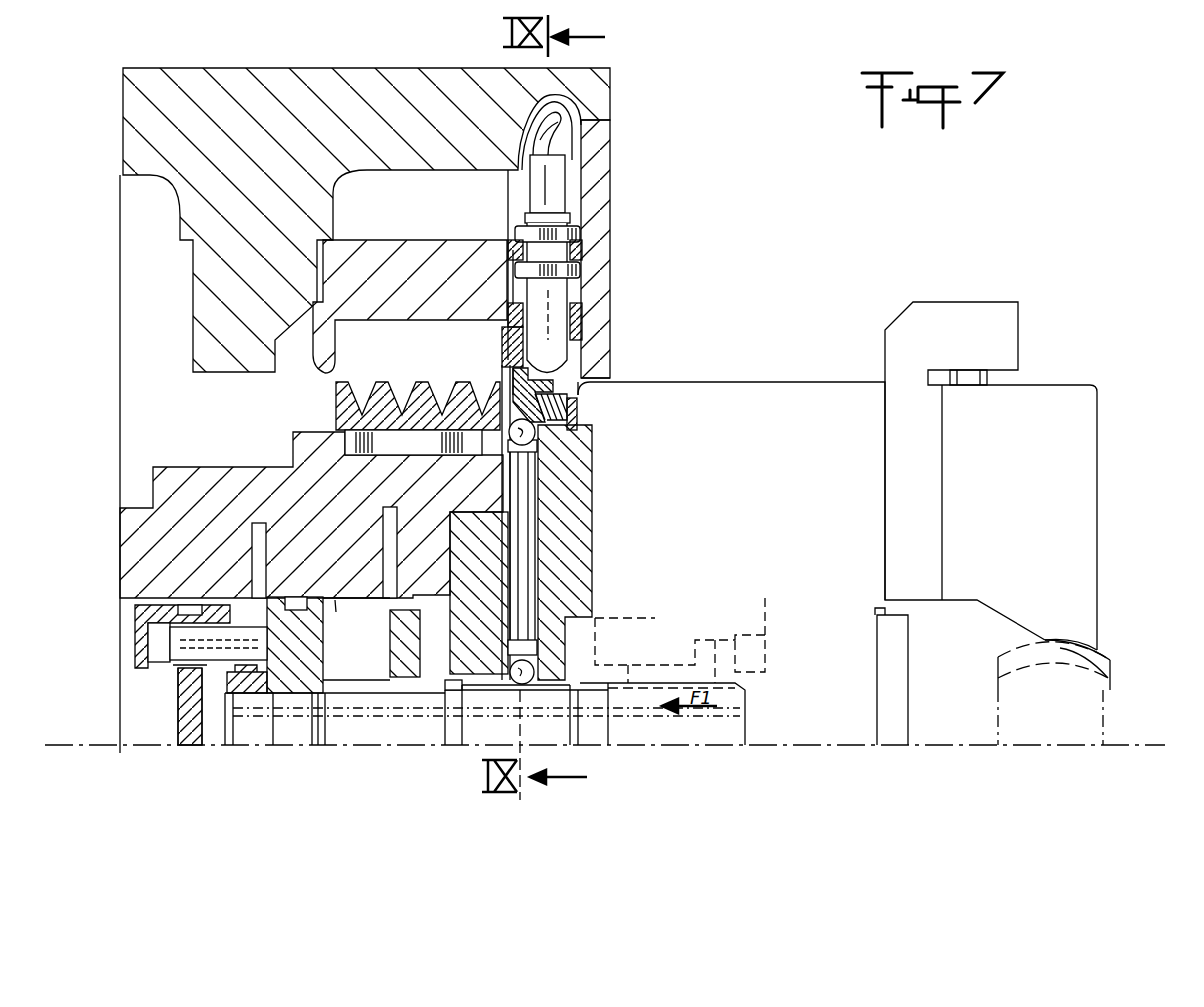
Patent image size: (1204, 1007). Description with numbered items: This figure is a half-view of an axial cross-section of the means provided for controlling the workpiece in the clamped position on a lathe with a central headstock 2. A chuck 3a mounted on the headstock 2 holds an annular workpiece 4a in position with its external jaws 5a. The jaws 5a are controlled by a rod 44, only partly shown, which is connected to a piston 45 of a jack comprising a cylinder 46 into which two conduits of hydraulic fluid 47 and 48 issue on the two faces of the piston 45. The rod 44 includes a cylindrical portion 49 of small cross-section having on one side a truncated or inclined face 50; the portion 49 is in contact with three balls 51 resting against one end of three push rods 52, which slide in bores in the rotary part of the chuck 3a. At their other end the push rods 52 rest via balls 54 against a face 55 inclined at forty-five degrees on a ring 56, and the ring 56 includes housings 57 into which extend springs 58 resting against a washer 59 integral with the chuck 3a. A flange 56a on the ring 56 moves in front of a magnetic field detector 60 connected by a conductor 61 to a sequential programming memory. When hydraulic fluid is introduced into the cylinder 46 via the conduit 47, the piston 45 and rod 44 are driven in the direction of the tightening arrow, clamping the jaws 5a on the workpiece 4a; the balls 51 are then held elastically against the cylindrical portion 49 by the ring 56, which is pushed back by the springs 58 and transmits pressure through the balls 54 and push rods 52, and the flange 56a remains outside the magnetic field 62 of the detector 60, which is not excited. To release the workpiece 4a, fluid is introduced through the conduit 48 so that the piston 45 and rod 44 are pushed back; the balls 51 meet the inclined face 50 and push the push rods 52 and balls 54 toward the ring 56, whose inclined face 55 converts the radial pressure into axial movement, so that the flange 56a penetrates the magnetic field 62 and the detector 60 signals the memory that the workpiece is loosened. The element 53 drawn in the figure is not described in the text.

The headstock 2 is at (250, 88).
The chuck 3a is at (765, 410).
The workpiece 4a is at (1100, 658).
The external jaws 5a is at (1057, 441).
The rod 44 is at (378, 748).
The piston 45 is at (297, 663).
The cylinder 46 is at (335, 606).
The conduit of hydraulic fluid 47 is at (385, 545).
The conduit of hydraulic fluid 48 is at (247, 520).
The cylindrical portion 49 is at (520, 688).
The inclined face 50 is at (447, 690).
The balls 51 is at (535, 669).
The push rods 52 is at (522, 525).
The sleeve 53 is at (535, 548).
The balls 54 is at (540, 442).
The inclined face 55 is at (447, 455).
The ring 56 is at (512, 395).
The flange 56a is at (513, 375).
The housings 57 is at (565, 400).
The springs 58 is at (550, 407).
The washer 59 is at (537, 433).
The magnetic field detector 60 is at (553, 293).
The conductor 61 is at (562, 113).
The magnetic field 62 is at (597, 378).